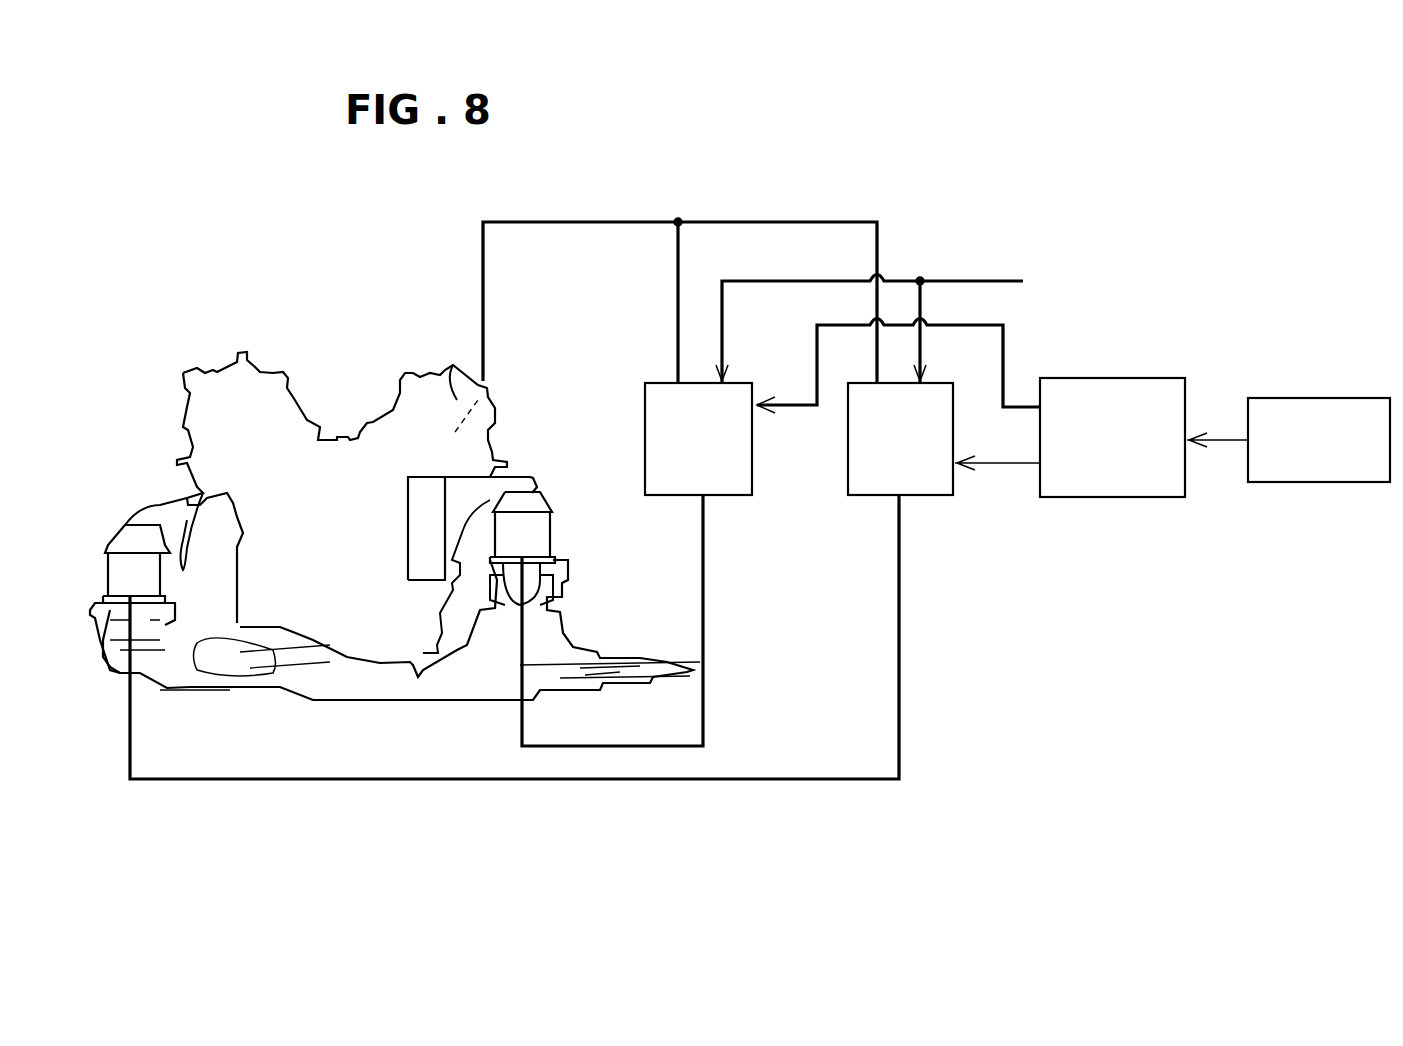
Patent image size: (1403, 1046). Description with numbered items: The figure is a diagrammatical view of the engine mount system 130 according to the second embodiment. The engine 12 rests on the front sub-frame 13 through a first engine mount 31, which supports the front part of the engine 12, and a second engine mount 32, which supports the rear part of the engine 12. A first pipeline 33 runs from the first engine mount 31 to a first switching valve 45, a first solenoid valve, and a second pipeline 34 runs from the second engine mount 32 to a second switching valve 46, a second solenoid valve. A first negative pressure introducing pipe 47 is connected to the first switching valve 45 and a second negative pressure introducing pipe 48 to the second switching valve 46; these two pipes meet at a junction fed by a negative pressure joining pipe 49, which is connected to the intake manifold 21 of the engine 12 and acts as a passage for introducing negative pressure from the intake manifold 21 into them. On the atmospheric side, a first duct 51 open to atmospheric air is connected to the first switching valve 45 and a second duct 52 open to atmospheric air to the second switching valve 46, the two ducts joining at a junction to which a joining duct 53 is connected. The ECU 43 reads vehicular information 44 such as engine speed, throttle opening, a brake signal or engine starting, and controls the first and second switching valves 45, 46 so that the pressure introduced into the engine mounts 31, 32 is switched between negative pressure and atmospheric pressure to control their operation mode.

The engine mount system 130 is at (233, 185).
The engine 12 is at (350, 398).
The intake manifold 21 is at (460, 422).
The front sub-frame 13 is at (290, 612).
The first engine mount 31 is at (140, 530).
The second engine mount 32 is at (522, 495).
The first pipeline 33 is at (287, 780).
The second pipeline 34 is at (608, 748).
The negative pressure joining pipe 49 is at (590, 224).
The first negative pressure introducing pipe 47 is at (760, 222).
The second negative pressure introducing pipe 48 is at (682, 247).
The second duct 52 is at (793, 280).
The first duct 51 is at (925, 300).
The joining duct 53 is at (1000, 281).
The second switching valve 46 is at (752, 475).
The first switching valve 45 is at (953, 485).
The ECU 43 is at (1112, 378).
The vehicular information 44 is at (1320, 398).